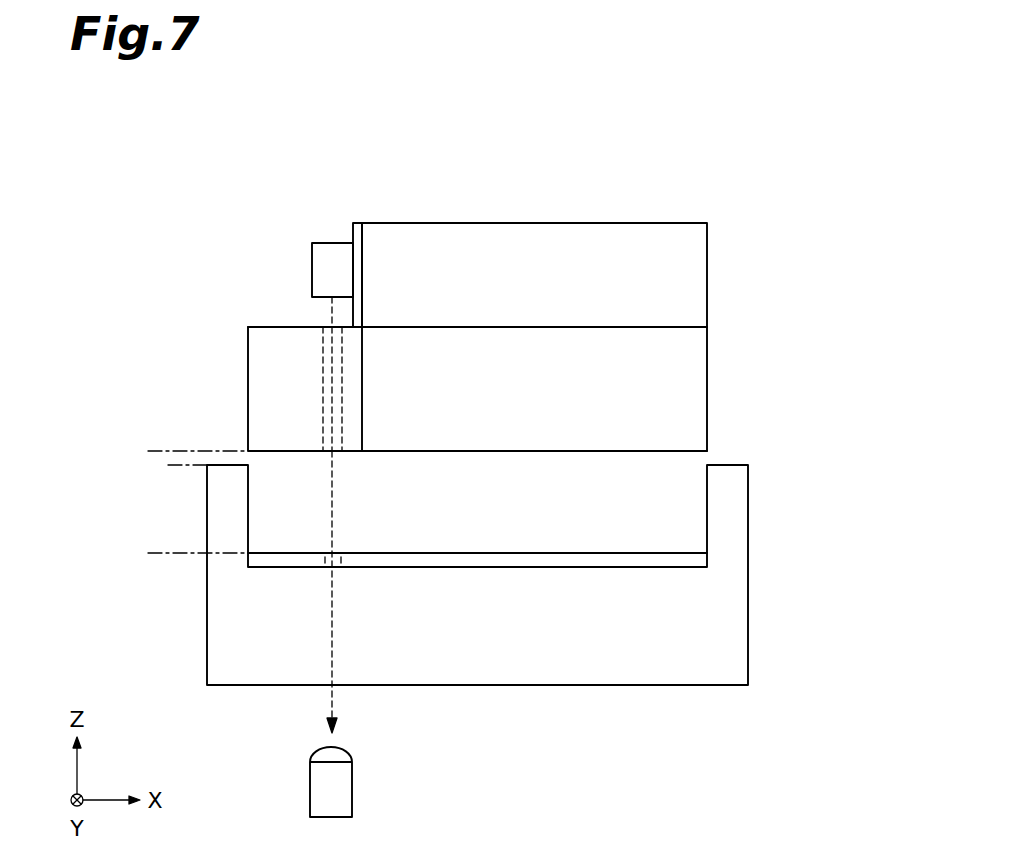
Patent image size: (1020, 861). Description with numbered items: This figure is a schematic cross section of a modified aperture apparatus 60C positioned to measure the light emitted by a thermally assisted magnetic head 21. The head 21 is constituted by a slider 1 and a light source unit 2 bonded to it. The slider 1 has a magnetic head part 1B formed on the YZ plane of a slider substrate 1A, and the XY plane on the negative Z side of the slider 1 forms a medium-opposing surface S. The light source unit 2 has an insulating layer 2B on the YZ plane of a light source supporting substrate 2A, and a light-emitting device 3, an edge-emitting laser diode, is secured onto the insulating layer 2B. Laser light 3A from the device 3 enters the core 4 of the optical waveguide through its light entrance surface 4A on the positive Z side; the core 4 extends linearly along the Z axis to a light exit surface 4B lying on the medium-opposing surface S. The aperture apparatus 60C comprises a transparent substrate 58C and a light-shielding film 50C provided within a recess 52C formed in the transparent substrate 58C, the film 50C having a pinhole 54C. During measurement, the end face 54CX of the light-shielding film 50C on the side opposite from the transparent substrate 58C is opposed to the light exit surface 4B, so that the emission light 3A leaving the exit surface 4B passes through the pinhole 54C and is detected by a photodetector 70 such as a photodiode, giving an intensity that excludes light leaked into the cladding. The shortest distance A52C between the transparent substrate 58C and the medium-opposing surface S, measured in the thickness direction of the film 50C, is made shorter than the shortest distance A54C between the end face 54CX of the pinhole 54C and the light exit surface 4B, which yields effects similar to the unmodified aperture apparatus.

The thermally assisted magnetic head 21 is at (682, 156).
The slider 1 is at (470, 165).
The slider substrate 1A is at (565, 330).
The magnetic head part 1B is at (357, 363).
The light source unit 2 is at (442, 163).
The light source supporting substrate 2A is at (425, 235).
The insulating layer 2B is at (357, 221).
The light-emitting device 3 is at (330, 252).
The laser light 3A is at (328, 302).
The core 4 is at (322, 380).
The light entrance surface 4A is at (327, 323).
The light exit surface 4B is at (328, 452).
The medium-opposing surface S is at (525, 451).
The recess 52C is at (705, 521).
The pinhole 54C is at (347, 553).
The end face 54CX is at (337, 550).
The light-shielding film 50C is at (567, 558).
The transparent substrate 58C is at (663, 662).
The aperture apparatus 60C is at (568, 733).
The shortest distance A52C is at (195, 484).
The shortest distance A54C is at (150, 451).
The photodetector 70 is at (343, 792).